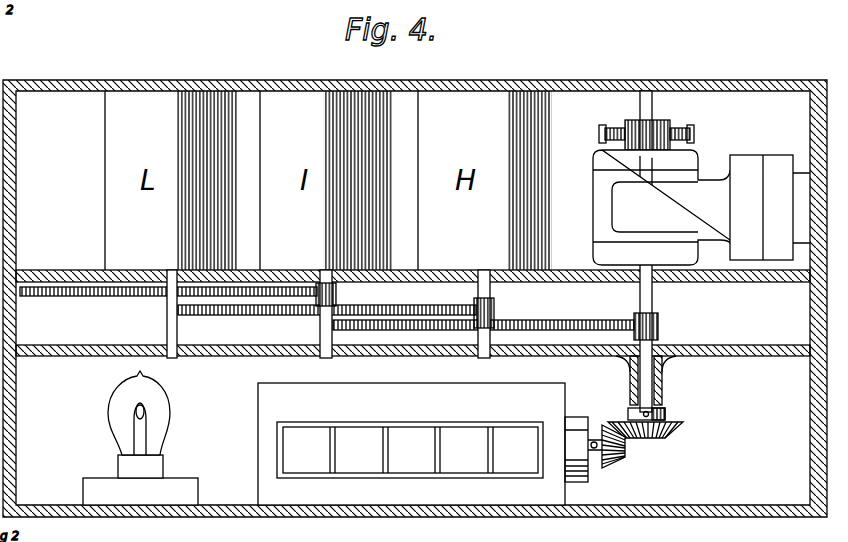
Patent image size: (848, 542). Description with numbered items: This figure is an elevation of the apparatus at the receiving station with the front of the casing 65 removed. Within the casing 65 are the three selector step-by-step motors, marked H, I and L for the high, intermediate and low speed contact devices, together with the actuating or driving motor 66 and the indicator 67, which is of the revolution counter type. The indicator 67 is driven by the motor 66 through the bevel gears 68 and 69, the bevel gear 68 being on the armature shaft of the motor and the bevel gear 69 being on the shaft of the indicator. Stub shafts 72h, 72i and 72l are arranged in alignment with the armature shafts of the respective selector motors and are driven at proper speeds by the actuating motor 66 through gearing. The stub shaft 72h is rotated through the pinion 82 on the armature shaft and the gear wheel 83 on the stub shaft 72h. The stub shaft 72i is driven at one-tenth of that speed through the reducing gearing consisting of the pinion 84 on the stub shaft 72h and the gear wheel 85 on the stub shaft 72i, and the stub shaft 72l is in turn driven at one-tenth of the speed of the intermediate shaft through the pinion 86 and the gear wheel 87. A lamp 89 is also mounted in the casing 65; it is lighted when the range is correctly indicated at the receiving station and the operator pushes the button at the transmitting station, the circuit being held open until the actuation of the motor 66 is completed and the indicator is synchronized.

The casing 65 is at (806, 104).
The actuating motor 66 is at (698, 166).
The indicator 67 is at (423, 444).
The bevel gear 68 is at (668, 440).
The bevel gear 69 is at (618, 466).
The stub shaft 72h is at (492, 297).
The stub shaft 72i is at (318, 331).
The stub shaft 72l is at (178, 331).
The pinion 82 is at (659, 318).
The gear wheel 83 is at (568, 320).
The pinion 84 is at (474, 303).
The gear wheel 85 is at (383, 306).
The pinion 86 is at (336, 294).
The gear wheel 87 is at (120, 298).
The lamp 89 is at (164, 418).